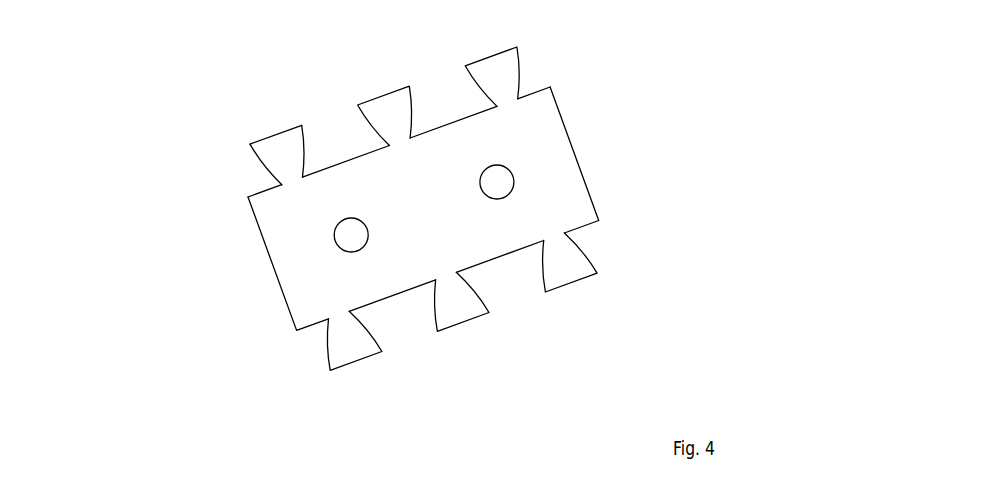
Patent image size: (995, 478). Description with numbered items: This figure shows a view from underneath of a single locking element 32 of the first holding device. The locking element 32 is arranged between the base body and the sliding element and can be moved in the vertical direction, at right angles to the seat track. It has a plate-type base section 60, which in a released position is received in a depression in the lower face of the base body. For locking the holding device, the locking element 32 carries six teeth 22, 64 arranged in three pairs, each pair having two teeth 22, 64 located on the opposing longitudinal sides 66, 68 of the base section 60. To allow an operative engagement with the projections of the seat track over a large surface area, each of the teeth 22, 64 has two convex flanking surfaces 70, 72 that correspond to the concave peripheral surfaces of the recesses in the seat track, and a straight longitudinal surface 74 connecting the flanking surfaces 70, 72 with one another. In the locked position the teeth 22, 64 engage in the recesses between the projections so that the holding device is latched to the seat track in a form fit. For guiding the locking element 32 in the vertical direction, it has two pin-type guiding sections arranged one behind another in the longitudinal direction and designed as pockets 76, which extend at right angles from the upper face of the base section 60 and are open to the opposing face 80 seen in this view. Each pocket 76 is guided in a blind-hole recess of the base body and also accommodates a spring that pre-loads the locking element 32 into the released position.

The locking element 32 is at (103, 38).
The tooth 22 is at (275, 157).
The plate-type base section 60 is at (569, 138).
The tooth 64 is at (345, 352).
The longitudinal side 66 is at (534, 92).
The longitudinal side 68 is at (581, 229).
The convex flanking surface 70 is at (282, 185).
The convex flanking surface 72 is at (302, 126).
The straight longitudinal surface 74 is at (263, 138).
The pocket 76 is at (348, 234).
The opposing face 80 is at (578, 185).